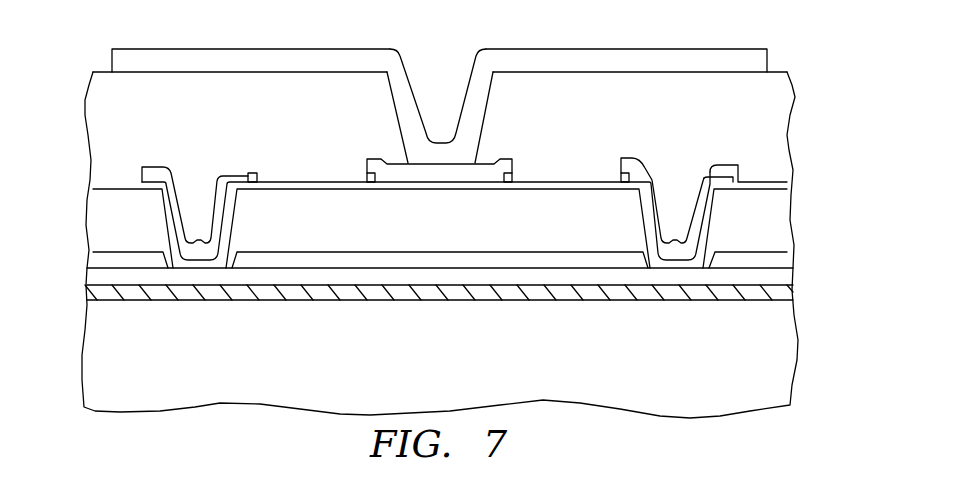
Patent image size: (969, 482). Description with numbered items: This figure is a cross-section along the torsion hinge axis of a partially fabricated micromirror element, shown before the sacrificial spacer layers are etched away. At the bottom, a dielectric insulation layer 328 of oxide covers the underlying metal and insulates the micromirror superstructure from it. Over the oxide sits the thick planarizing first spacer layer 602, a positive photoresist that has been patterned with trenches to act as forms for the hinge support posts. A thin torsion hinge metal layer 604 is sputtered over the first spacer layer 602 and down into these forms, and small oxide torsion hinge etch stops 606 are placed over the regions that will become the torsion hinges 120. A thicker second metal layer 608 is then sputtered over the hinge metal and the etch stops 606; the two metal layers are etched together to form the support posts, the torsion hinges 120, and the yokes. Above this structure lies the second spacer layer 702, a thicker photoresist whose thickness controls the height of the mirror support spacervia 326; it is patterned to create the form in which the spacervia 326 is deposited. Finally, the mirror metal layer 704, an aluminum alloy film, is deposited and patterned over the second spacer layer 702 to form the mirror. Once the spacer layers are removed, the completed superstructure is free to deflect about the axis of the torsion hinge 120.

The torsion hinge 120 is at (486, 117).
The mirror support spacervia 326 is at (466, 82).
The dielectric insulation layer 328 is at (342, 264).
The first spacer layer 602 is at (158, 231).
The torsion hinge metal layer 604 is at (739, 182).
The torsion hinge etch stop 606 is at (253, 173).
The second metal layer 608 is at (236, 173).
The second spacer layer 702 is at (200, 104).
The mirror metal layer 704 is at (683, 58).